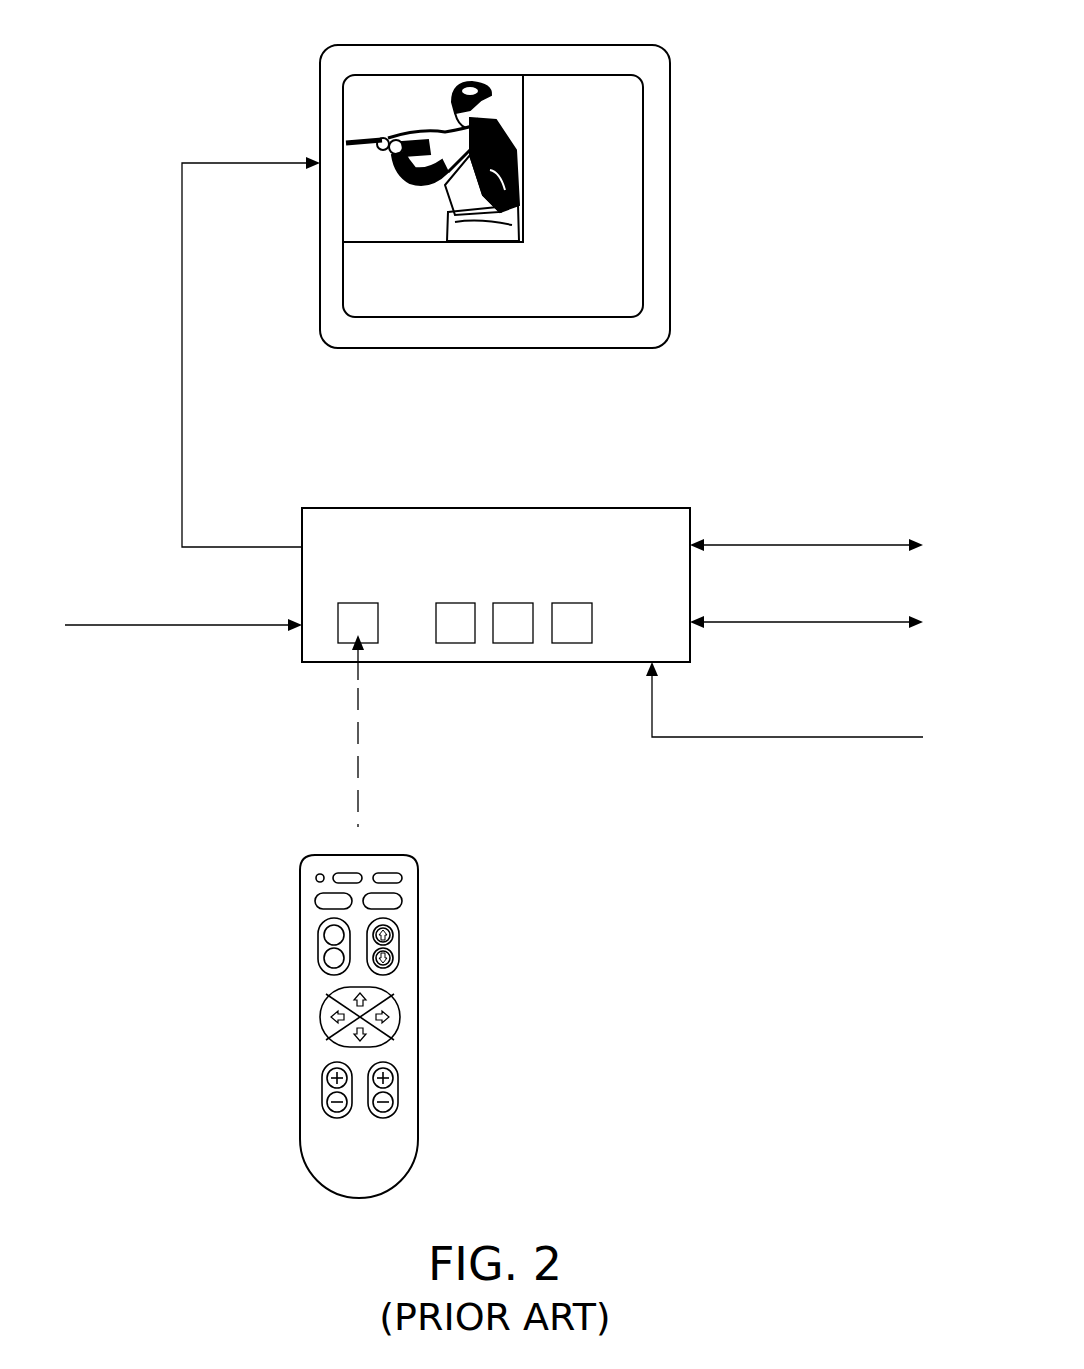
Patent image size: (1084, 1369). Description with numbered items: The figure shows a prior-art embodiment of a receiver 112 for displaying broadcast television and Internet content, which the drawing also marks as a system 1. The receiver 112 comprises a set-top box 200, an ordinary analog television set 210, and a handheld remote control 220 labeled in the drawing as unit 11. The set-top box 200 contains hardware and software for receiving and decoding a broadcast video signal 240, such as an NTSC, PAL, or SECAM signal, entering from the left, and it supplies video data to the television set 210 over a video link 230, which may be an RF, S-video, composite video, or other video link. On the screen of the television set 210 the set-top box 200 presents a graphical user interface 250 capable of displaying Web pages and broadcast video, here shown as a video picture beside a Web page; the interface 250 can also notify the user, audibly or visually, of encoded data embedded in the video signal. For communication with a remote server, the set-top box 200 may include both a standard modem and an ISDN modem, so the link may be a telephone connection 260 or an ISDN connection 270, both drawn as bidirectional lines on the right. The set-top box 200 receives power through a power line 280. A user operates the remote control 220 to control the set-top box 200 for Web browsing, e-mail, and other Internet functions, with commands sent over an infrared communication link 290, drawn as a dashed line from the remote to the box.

The receiver 112 is at (813, 36).
The system 1 is at (738, 938).
The television set 210 is at (670, 180).
The graphical user interface 250 is at (593, 258).
The video link 230 is at (182, 427).
The broadcast video signal 240 is at (145, 627).
The set-top box 200 is at (680, 651).
The telephone connection 260 is at (733, 545).
The ISDN connection 270 is at (768, 623).
The power line 280 is at (725, 738).
The infrared communication link 290 is at (358, 700).
The remote control 220 is at (418, 966).
The remote control keypad 11 is at (372, 1170).